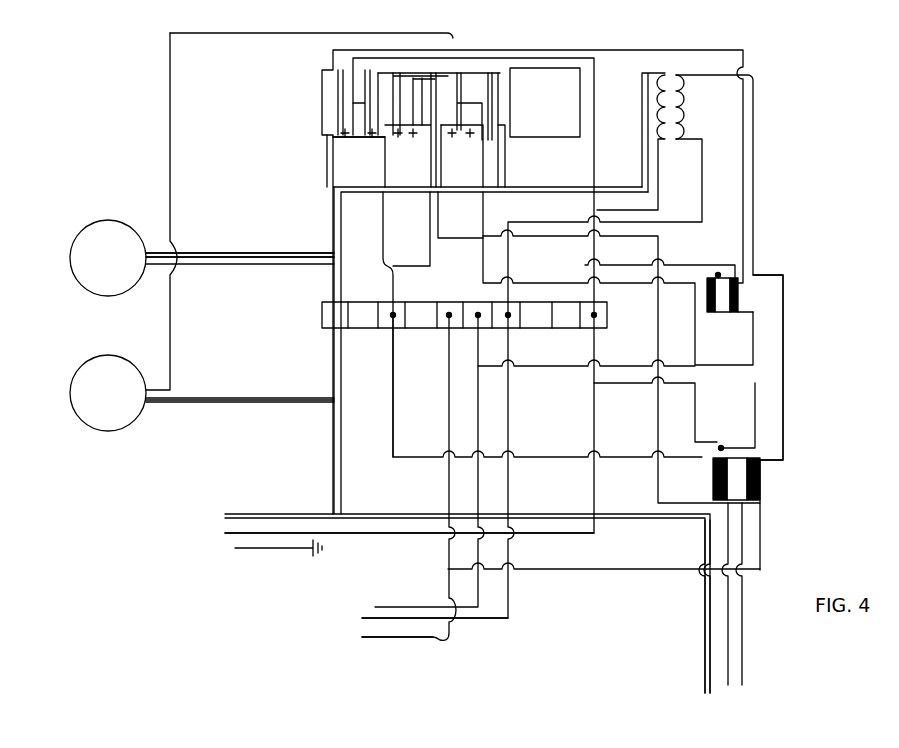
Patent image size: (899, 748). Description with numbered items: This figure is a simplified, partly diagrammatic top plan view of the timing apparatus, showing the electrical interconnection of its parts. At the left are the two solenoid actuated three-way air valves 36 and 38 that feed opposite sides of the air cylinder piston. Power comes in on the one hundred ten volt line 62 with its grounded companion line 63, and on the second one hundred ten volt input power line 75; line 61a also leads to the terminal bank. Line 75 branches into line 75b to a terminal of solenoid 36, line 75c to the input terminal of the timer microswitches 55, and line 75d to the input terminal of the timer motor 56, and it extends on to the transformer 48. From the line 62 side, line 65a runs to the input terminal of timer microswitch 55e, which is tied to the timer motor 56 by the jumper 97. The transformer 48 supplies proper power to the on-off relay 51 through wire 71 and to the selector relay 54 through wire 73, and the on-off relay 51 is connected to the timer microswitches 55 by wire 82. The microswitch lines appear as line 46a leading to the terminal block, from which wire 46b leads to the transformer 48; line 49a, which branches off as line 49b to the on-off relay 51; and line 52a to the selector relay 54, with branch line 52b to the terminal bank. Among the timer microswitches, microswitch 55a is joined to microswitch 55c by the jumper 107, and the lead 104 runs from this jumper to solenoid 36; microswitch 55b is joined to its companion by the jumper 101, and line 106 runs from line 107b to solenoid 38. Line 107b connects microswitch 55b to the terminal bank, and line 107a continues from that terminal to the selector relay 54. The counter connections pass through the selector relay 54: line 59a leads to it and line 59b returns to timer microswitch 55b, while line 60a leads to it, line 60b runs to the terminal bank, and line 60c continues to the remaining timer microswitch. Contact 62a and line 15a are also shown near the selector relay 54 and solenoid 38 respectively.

The solenoid actuated air valve 36 is at (70, 260).
The solenoid actuated air valve 38 is at (90, 422).
The line 106 is at (170, 333).
The jumper 101 is at (330, 38).
The lead 104 is at (210, 266).
The line 75b is at (192, 254).
The line 15a is at (213, 397).
The wire 82 is at (330, 62).
The timer microswitches 55 is at (318, 120).
The line 75c is at (325, 160).
The timer microswitch 55e is at (383, 170).
The timer microswitch 55a is at (443, 150).
The timer microswitch 55c is at (410, 130).
The timer microswitch 55b is at (469, 130).
The line 75d is at (500, 170).
The timer motor 56 is at (530, 137).
The line 65a is at (363, 73).
The jumper 107 is at (462, 77).
The jumper 97 is at (493, 63).
The line 60c is at (390, 203).
The line 107b is at (438, 242).
The line 59b is at (705, 343).
The line 107a is at (658, 240).
The transformer 48 is at (676, 140).
The wire 46b is at (702, 173).
The wire 71 is at (753, 95).
The on-off relay 51 is at (757, 265).
The wire 73 is at (785, 300).
The contact 62a is at (733, 383).
The line 49b is at (560, 356).
The line 60b is at (393, 377).
The line 52b is at (448, 428).
The line 46a is at (420, 617).
The line 49a is at (392, 606).
The selector relay 54 is at (760, 477).
The second 110 v. input power line 75 is at (553, 178).
The 110 v. line 62 is at (262, 531).
The grounded line 63 is at (262, 549).
The line 52a is at (552, 560).
The line 59a is at (742, 540).
The line 60a is at (728, 548).
The line 61a is at (705, 637).